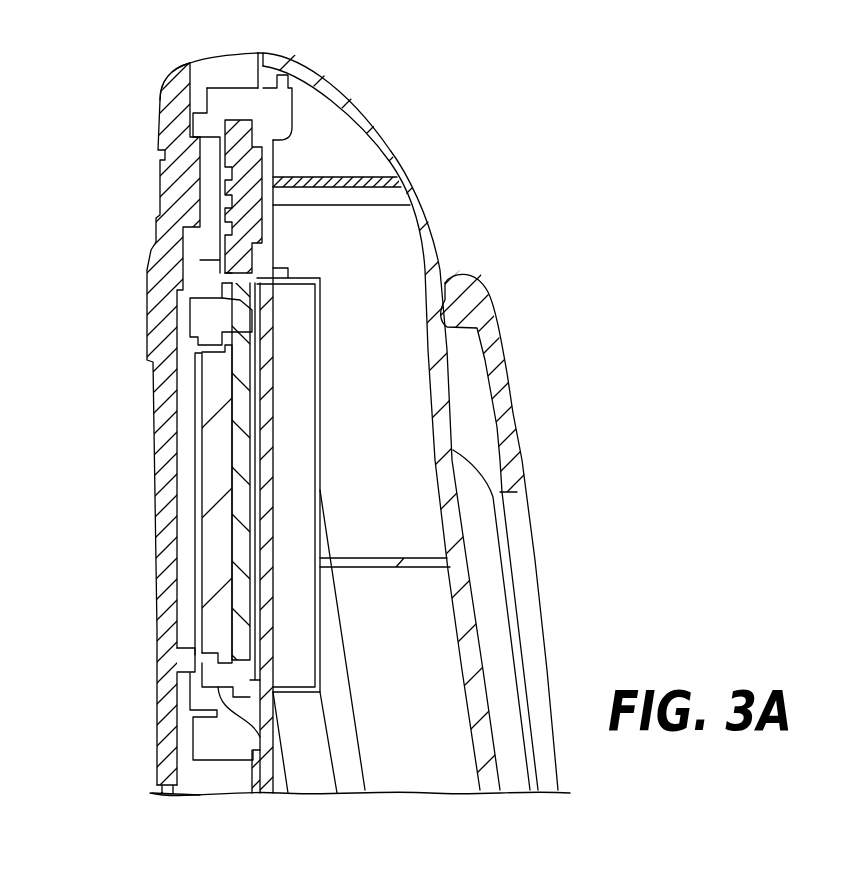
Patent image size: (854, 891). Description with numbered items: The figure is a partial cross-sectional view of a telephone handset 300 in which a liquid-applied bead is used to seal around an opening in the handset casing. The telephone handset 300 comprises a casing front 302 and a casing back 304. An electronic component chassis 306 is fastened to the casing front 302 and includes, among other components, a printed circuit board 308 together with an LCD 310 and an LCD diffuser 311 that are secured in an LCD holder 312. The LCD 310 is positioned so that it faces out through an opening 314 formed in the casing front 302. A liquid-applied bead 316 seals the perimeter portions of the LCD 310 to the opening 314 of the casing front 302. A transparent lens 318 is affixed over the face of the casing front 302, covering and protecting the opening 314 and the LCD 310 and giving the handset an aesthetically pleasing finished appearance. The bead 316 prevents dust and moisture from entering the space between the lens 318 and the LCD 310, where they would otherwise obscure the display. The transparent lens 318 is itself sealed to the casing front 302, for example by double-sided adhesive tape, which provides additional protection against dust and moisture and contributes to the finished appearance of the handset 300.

The telephone handset 300 is at (78, 705).
The casing front 302 is at (235, 68).
The casing back 304 is at (393, 160).
The electronic component chassis 306 is at (276, 815).
The printed circuit board 308 is at (265, 565).
The LCD 310 is at (205, 417).
The LCD diffuser 311 is at (237, 503).
The LCD holder 312 is at (200, 312).
The opening 314 is at (185, 648).
The liquid-applied bead 316 is at (202, 385).
The transparent lens 318 is at (165, 153).